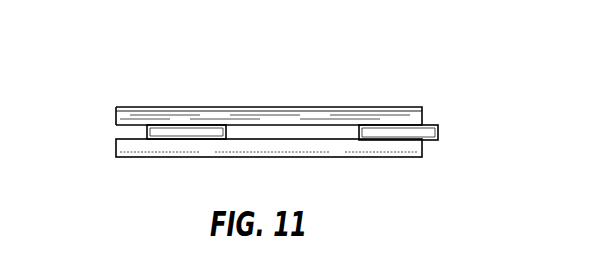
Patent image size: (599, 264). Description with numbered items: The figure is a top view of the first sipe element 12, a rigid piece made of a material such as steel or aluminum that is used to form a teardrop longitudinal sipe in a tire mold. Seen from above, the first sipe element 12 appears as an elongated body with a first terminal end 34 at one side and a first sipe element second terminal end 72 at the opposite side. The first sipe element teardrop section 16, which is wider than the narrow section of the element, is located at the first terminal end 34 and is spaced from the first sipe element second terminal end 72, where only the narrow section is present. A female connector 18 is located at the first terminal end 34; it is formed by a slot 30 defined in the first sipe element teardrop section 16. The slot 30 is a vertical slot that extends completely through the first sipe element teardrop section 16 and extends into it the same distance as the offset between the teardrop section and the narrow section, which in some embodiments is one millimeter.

The first sipe element 12 is at (382, 74).
The first sipe element teardrop section 16 is at (190, 112).
The female connector 18 is at (120, 132).
The slot 30 is at (140, 133).
The first terminal end 34 is at (116, 147).
The first sipe element second terminal end 72 is at (444, 131).